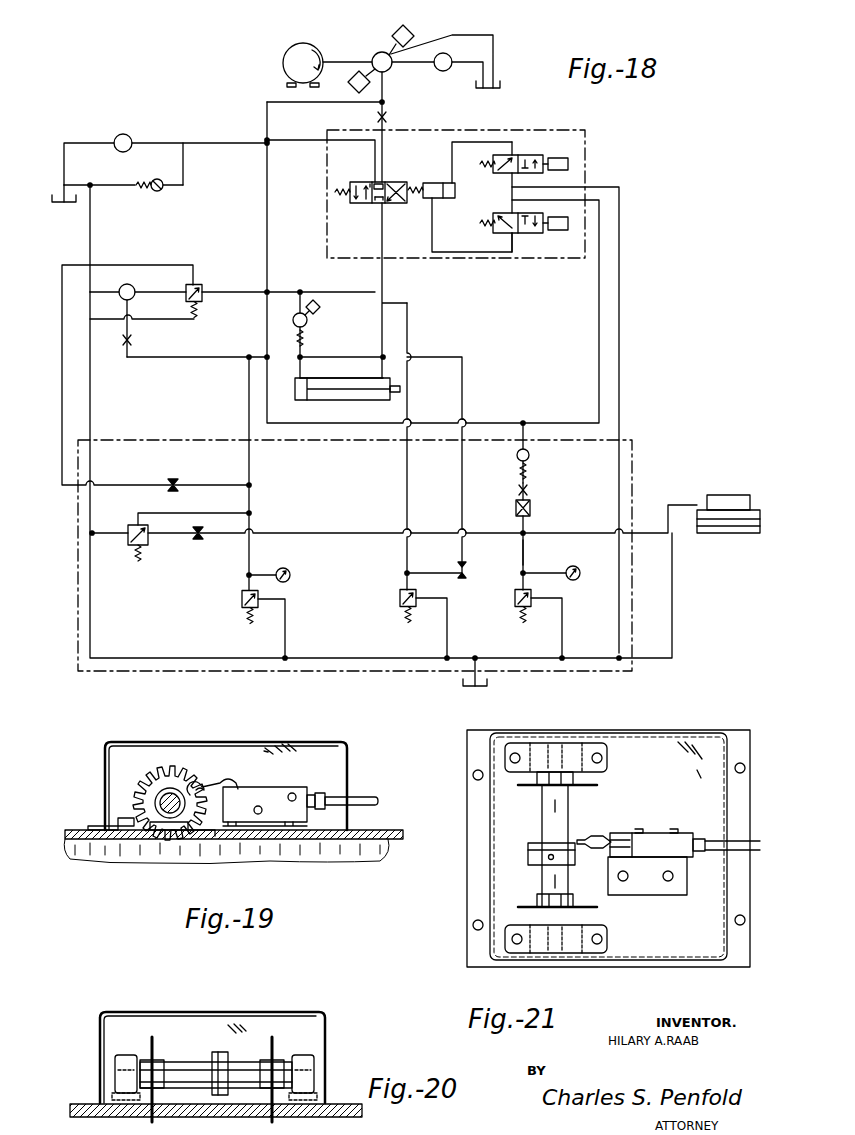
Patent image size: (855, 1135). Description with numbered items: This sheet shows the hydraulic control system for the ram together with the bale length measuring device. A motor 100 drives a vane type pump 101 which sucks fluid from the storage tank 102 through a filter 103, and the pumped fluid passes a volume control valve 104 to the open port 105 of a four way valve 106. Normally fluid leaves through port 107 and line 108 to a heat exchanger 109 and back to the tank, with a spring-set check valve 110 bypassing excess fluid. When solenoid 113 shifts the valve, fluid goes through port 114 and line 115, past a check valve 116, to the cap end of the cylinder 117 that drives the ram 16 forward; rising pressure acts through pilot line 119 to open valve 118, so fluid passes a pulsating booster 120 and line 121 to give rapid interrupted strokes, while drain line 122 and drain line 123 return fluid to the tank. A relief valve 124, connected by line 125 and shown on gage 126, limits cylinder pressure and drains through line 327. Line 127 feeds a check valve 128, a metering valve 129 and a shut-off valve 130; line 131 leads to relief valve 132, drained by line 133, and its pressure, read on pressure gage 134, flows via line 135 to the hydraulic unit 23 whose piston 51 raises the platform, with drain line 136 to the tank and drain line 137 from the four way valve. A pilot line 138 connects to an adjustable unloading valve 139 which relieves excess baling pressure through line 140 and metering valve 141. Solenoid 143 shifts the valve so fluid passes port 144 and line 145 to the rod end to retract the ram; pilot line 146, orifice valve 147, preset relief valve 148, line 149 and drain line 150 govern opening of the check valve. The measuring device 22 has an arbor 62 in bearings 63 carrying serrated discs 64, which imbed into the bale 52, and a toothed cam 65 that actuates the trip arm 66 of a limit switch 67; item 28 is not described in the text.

In FIG. 18, the motor 100 is at (283, 62).
In FIG. 18, the vane type pump 101 is at (371, 55).
In FIG. 18, the storage tank 102 is at (505, 90).
In FIG. 18, the filter 103 is at (448, 71).
In FIG. 18, the volume control valve 104 is at (388, 117).
In FIG. 18, the open port 105 is at (383, 181).
In FIG. 18, the four way valve 106 is at (462, 133).
In FIG. 18, the port 107 is at (370, 182).
In FIG. 18, the line 108 is at (237, 142).
In FIG. 18, the heat exchanger 109 is at (137, 133).
In FIG. 18, the check valve 110 is at (161, 190).
In FIG. 18, the solenoid 113 is at (557, 158).
In FIG. 18, the port 114 is at (373, 204).
In FIG. 18, the line 115 is at (247, 292).
In FIG. 18, the check valve 116 is at (307, 325).
In FIG. 18, the cylinder 117 is at (341, 372).
In FIG. 18, the ram head 16 is at (357, 385).
In FIG. 18, the valve 118 is at (201, 284).
In FIG. 18, the pilot line 119 is at (66, 262).
In FIG. 18, the pulsating booster 120 is at (137, 282).
In FIG. 18, the line 121 is at (210, 357).
In FIG. 18, the drain line 122 is at (92, 400).
In FIG. 18, the drain line 123 is at (91, 218).
In FIG. 18, the relief valve 124 is at (242, 601).
In FIG. 18, the line 125 is at (251, 544).
In FIG. 18, the gage 126 is at (290, 572).
In FIG. 18, the line 127 is at (268, 208).
In FIG. 18, the check valve 128 is at (517, 459).
In FIG. 18, the metering valve 129 is at (516, 490).
In FIG. 18, the shut-off valve 130 is at (515, 509).
In FIG. 18, the line 131 is at (522, 548).
In FIG. 18, the relief valve 132 is at (515, 598).
In FIG. 18, the drain line 133 is at (563, 620).
In FIG. 18, the pressure gage 134 is at (576, 565).
In FIG. 18, the line 135 is at (564, 526).
In FIG. 18, the drain line 136 is at (674, 578).
In FIG. 18, the drain line 137 is at (621, 263).
In FIG. 18, the pilot line 138 is at (225, 513).
In FIG. 18, the adjustable unloading valve 139 is at (130, 524).
In FIG. 18, the line 140 is at (381, 527).
In FIG. 18, the metering valve 141 is at (208, 539).
In FIG. 18, the solenoid 143 is at (556, 244).
In FIG. 18, the port 144 is at (384, 202).
In FIG. 18, the line 145 is at (385, 275).
In FIG. 18, the pilot line 146 is at (463, 384).
In FIG. 18, the orifice valve 147 is at (454, 577).
In FIG. 18, the preset relief valve 148 is at (399, 596).
In FIG. 18, the line 149 is at (406, 472).
In FIG. 18, the drain line 150 is at (448, 620).
In FIG. 18, the drain line 327 is at (286, 619).
In FIG. 18, the piston 51 is at (736, 494).
In FIG. 18, the hydraulic unit 23 is at (748, 536).
In FIG. 19, the device 22 is at (352, 749).
In FIG. 21, the device 22 is at (674, 726).
In FIG. 20, the device 22 is at (310, 1012).
In FIG. 19, the base plate 28 is at (386, 830).
In FIG. 20, the base plate 28 is at (94, 1104).
In FIG. 19, the formed bale 52 is at (326, 852).
In FIG. 21, the arbor 62 is at (571, 804).
In FIG. 20, the arbor 62 is at (256, 1066).
In FIG. 21, the bearings 63 is at (569, 750).
In FIG. 20, the bearings 63 is at (130, 1054).
In FIG. 19, the serrated discs 64 is at (160, 766).
In FIG. 21, the serrated discs 64 is at (598, 782).
In FIG. 20, the serrated discs 64 is at (154, 1042).
In FIG. 19, the toothed cam 65 is at (156, 777).
In FIG. 21, the toothed cam 65 is at (533, 846).
In FIG. 20, the toothed cam 65 is at (212, 1050).
In FIG. 19, the trip arm 66 is at (204, 783).
In FIG. 21, the trip arm 66 is at (593, 841).
In FIG. 19, the limit switch 67 is at (284, 788).
In FIG. 21, the limit switch 67 is at (664, 834).